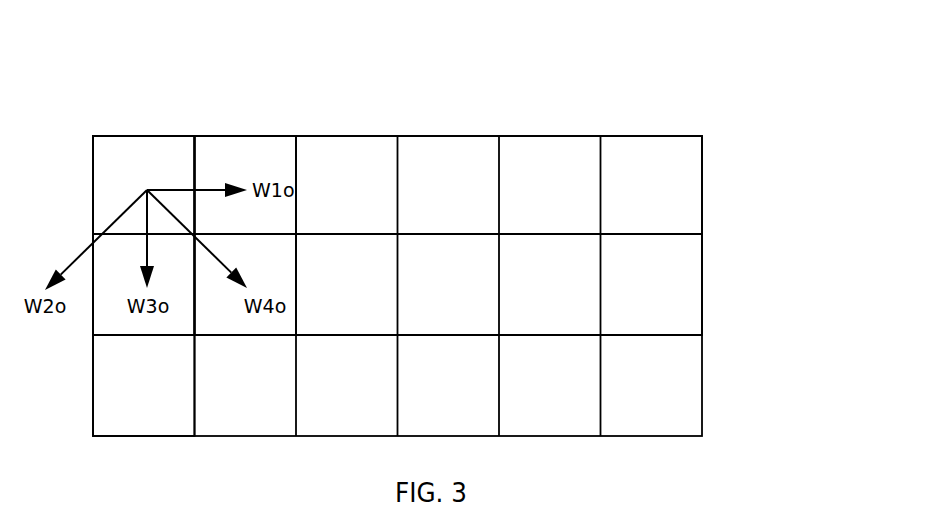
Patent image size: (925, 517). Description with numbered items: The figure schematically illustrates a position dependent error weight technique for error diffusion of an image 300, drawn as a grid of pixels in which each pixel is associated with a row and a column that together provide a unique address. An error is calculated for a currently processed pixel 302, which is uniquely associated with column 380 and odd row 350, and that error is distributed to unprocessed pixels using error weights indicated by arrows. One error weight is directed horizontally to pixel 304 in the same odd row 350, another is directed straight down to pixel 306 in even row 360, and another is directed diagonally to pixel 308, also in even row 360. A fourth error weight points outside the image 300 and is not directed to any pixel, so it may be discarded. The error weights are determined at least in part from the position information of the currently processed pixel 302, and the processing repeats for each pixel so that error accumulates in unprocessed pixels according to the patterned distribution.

The image 300 is at (641, 64).
The currently processed pixel 302 is at (132, 180).
The pixel 304 is at (230, 172).
The pixel 306 is at (101, 266).
The pixel 308 is at (247, 266).
The odd row 350 is at (718, 136).
The even row 360 is at (718, 234).
The column 380 is at (92, 130).